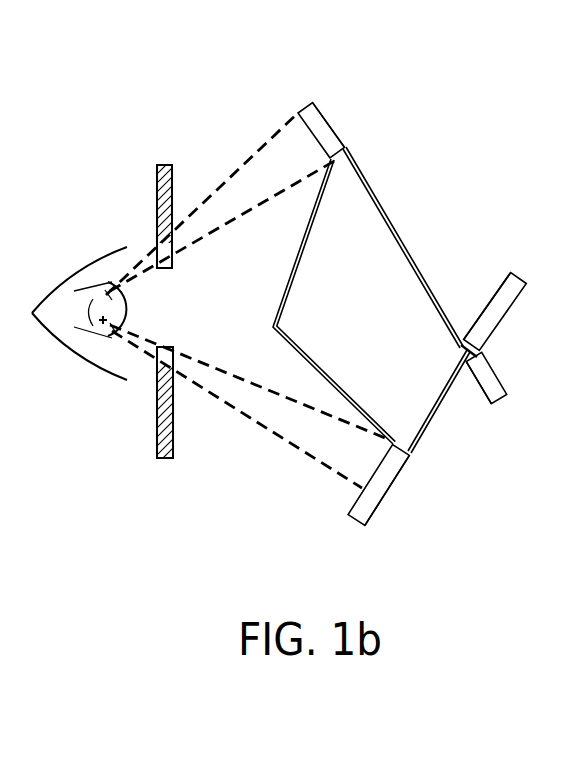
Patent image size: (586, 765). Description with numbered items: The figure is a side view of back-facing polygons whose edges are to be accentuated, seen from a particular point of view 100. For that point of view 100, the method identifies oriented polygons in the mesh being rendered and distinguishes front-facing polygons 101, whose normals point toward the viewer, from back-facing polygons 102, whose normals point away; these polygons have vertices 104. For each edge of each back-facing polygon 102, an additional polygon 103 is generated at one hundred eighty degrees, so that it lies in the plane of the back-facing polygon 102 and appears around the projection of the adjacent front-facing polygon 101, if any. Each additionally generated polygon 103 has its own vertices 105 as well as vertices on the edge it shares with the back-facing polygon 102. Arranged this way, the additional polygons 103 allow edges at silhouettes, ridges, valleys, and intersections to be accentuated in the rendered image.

The point of view 100 is at (83, 342).
The front-facing polygon 101 is at (296, 270).
The back-facing polygon 102 is at (441, 313).
The additional polygon 103 is at (328, 123).
The vertex 104 is at (346, 148).
The vertex of additional polygon 105 is at (306, 108).